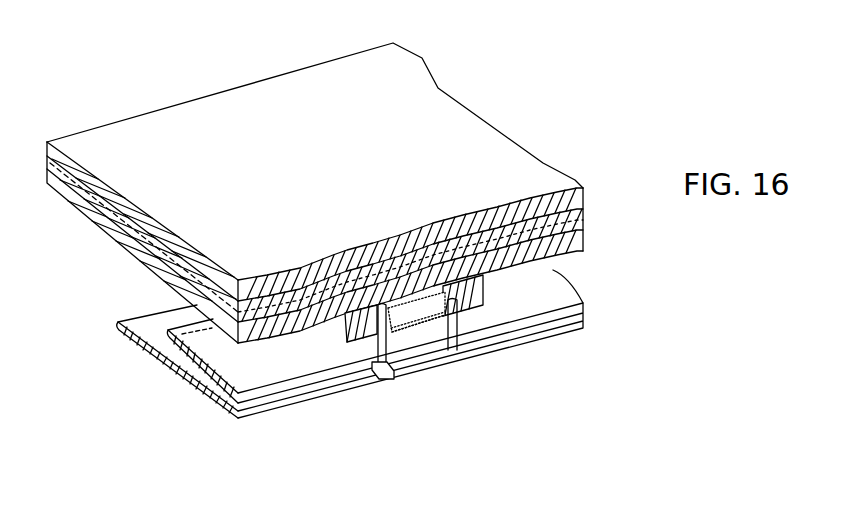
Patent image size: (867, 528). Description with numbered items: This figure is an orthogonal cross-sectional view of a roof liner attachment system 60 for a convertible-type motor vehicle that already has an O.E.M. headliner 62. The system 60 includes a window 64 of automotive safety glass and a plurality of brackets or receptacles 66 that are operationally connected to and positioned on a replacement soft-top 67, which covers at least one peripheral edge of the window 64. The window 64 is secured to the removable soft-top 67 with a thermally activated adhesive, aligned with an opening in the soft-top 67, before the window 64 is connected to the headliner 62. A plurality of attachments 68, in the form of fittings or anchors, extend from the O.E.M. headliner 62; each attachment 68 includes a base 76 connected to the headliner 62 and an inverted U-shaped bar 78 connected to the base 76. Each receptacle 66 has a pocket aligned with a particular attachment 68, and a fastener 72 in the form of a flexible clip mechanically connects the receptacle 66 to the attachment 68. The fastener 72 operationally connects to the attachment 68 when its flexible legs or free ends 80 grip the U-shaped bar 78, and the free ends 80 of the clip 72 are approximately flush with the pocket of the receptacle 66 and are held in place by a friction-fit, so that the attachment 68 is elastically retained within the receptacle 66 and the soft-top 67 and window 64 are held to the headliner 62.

The roof liner attachment system 60 is at (593, 95).
The O.E.M. headliner 62 is at (210, 390).
The window 64 is at (585, 222).
The receptacle 66 is at (343, 340).
The replacement soft-top 67 is at (553, 164).
The attachment 68 is at (380, 396).
The fastener 72 is at (468, 369).
The base 76 is at (393, 330).
The inverted U-shaped bar 78 is at (386, 335).
The free ends 80 is at (402, 333).